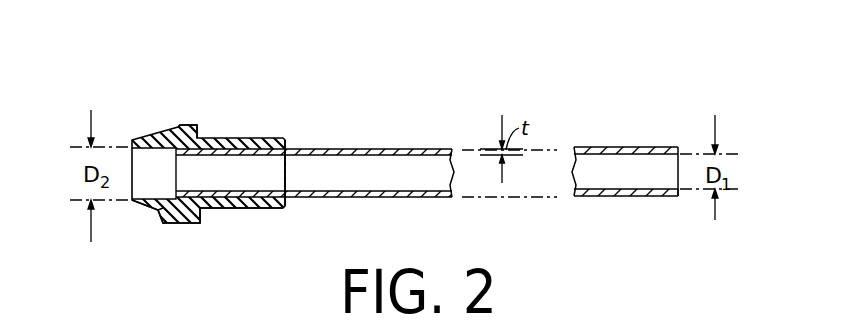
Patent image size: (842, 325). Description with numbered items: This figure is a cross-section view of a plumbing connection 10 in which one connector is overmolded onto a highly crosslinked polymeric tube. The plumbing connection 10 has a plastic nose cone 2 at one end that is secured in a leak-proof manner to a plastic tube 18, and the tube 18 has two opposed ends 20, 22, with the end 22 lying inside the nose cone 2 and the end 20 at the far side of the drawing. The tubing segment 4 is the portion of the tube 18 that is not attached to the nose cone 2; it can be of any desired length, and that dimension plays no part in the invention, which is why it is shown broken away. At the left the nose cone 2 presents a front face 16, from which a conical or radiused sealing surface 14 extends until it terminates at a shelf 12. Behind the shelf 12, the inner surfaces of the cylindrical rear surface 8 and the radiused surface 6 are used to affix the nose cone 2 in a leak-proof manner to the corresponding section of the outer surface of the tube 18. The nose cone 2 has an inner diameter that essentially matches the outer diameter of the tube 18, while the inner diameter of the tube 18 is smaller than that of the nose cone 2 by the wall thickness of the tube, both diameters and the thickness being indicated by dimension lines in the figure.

The plumbing connection 10 is at (230, 59).
The plastic nose cone 2 is at (149, 124).
The shelf 12 is at (195, 123).
The conical or radiused sealing surface 14 is at (171, 220).
The front face 16 is at (137, 204).
The end of tube 22 is at (160, 213).
The cylindrical rear surface 8 is at (238, 208).
The radiused surface 6 is at (279, 208).
The plastic tube 18 is at (422, 149).
The tubing segment 4 is at (636, 138).
The end of tube 20 is at (679, 197).